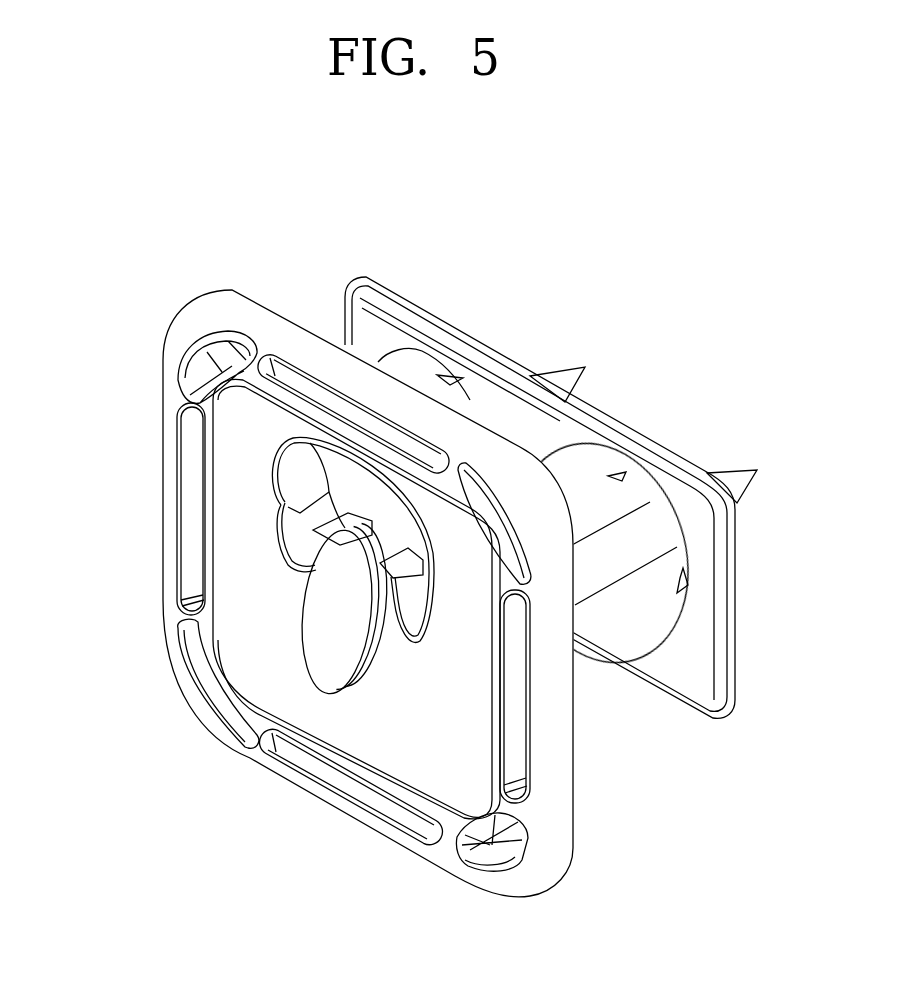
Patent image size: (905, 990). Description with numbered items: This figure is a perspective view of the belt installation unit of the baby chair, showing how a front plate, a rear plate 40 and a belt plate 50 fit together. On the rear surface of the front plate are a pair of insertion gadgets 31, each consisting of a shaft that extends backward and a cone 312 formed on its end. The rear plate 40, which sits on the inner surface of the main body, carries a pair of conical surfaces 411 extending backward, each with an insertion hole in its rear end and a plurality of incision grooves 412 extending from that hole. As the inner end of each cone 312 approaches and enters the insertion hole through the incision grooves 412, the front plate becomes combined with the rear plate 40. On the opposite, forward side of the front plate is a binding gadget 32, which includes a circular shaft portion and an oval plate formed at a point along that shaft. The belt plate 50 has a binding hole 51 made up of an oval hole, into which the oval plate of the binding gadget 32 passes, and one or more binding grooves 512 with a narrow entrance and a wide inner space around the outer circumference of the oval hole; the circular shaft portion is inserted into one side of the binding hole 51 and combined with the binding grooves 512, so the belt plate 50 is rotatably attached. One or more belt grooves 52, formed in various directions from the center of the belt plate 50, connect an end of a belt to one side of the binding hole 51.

The insertion gadget 31 is at (622, 535).
The cone 312 is at (737, 474).
The binding gadget 32 is at (297, 517).
The rear plate 40 is at (736, 672).
The conical surface 411 is at (670, 623).
The incision groove 412 is at (687, 572).
The belt plate 50 is at (450, 790).
The binding hole 51 is at (297, 463).
The binding groove 512 is at (327, 557).
The belt groove 52 is at (345, 782).